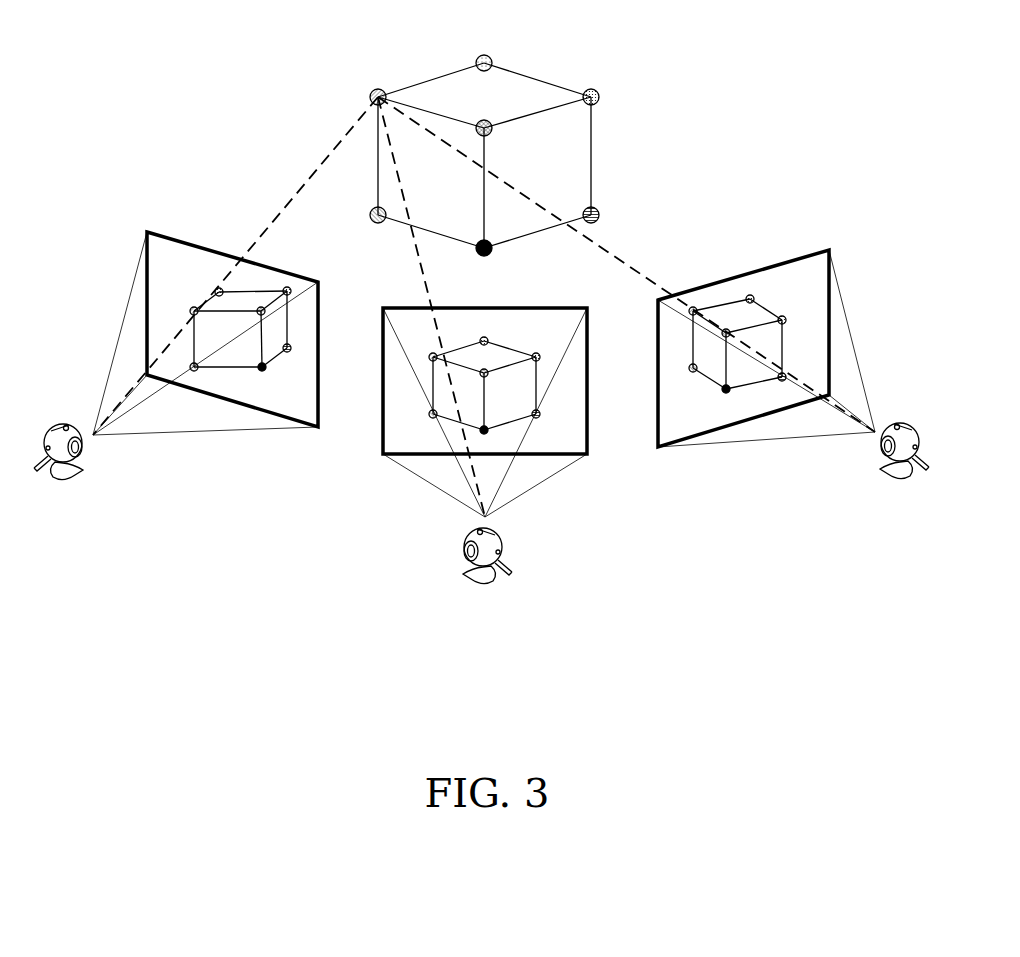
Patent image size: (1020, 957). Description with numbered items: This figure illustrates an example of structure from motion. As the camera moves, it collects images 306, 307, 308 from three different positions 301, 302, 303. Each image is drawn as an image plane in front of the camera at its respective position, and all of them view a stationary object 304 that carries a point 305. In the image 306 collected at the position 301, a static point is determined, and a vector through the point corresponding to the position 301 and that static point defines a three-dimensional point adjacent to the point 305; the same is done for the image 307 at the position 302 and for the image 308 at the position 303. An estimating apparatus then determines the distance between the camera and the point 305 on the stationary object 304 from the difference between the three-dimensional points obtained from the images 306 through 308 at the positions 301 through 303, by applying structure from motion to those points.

The camera position 301 is at (71, 479).
The camera position 302 is at (497, 587).
The camera position 303 is at (912, 483).
The stationary object 304 is at (538, 78).
The point x1 305 is at (377, 89).
The image 306 is at (190, 242).
The image 307 is at (538, 307).
The image 308 is at (742, 273).